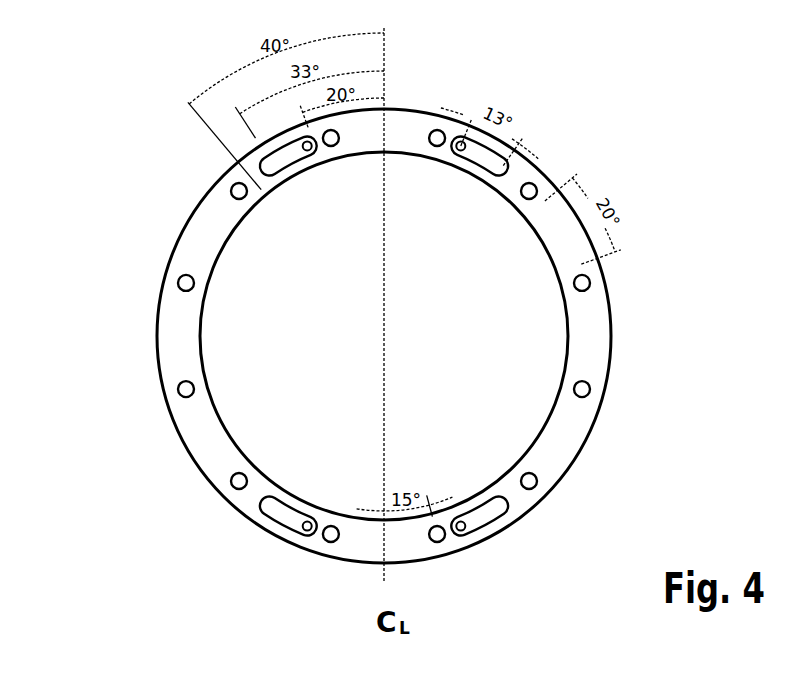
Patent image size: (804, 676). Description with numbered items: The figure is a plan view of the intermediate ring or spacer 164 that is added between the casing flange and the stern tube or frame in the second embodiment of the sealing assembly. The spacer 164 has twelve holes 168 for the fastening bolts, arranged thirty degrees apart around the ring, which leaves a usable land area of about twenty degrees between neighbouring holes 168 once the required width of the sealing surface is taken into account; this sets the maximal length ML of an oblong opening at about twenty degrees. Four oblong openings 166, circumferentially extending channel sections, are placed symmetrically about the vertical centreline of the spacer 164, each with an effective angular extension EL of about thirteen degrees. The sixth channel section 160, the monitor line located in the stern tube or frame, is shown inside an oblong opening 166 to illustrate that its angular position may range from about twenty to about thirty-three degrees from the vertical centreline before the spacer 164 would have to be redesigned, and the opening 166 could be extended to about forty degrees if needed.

The sixth channel section 160 is at (302, 529).
The intermediate ring or spacer 164 is at (205, 238).
The oblong opening 166 is at (268, 157).
The holes for the fastening bolts 168 is at (184, 385).
The effective angular extension EL is at (517, 99).
The maximal length ML is at (597, 182).